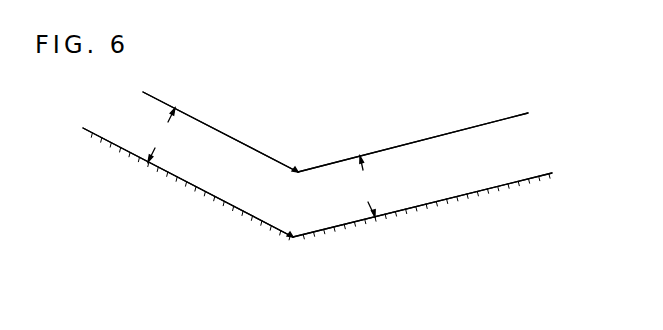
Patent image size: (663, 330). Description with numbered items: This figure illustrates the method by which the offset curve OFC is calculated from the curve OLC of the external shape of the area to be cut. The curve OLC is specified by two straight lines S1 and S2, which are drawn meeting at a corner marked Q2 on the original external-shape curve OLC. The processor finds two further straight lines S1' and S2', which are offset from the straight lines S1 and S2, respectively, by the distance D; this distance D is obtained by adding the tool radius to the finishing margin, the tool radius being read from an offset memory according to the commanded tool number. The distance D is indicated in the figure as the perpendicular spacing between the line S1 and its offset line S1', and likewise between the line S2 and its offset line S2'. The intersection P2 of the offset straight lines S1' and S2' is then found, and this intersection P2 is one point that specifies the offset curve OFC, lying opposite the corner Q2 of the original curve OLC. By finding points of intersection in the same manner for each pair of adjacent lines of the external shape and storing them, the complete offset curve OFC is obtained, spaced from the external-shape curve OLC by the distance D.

The offset straight line S1' is at (220, 132).
The offset straight line S2' is at (413, 136).
The offset curve OFC is at (267, 155).
The curve of the external shape OLC is at (240, 209).
The straight line S1 is at (188, 184).
The straight line S2 is at (422, 211).
The intersection P2 is at (302, 180).
The vertex point of original curve Q2 is at (301, 249).
The offset distance D is at (261, 162).